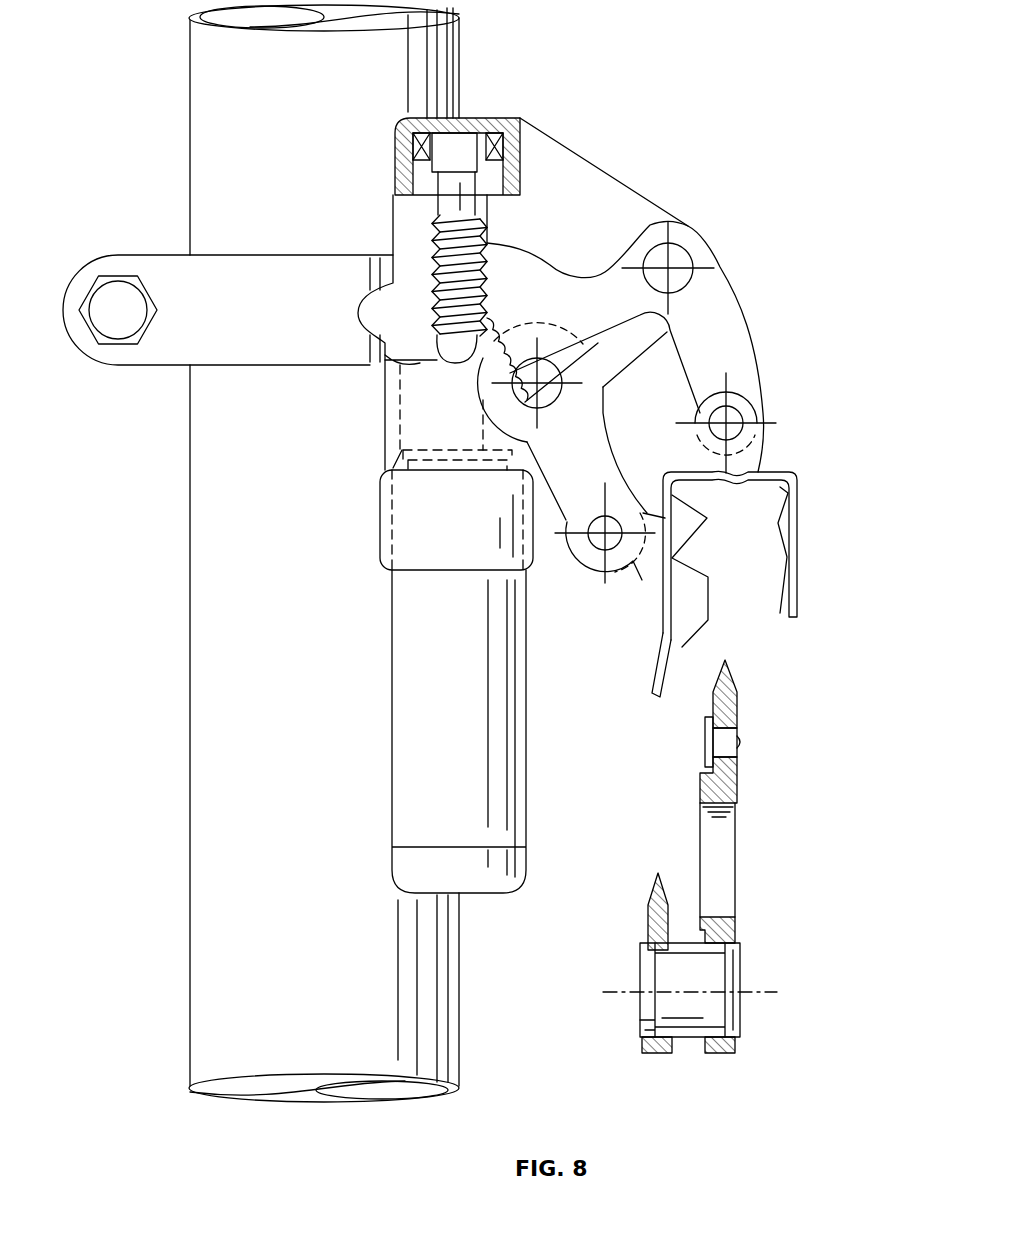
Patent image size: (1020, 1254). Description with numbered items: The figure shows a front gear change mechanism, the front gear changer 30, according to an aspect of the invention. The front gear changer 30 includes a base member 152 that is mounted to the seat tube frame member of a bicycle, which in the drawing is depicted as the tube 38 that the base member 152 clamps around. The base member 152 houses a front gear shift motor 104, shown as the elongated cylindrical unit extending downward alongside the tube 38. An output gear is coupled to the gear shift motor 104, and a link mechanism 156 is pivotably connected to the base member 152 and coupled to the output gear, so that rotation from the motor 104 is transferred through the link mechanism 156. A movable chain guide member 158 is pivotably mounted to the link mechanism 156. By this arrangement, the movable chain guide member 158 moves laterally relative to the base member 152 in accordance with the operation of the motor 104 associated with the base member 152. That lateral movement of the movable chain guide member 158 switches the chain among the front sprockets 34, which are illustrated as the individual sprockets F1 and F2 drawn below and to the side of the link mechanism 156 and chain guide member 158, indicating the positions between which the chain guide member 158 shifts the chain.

The front gear changer 30 is at (632, 155).
The front sprockets 34 is at (776, 895).
The pipe 38 is at (198, 430).
The front gear shift motor 104 is at (392, 785).
The base member 152 is at (240, 283).
The link mechanism 156 is at (732, 306).
The movable chain guide member 158 is at (797, 547).
The front sprocket F1 is at (658, 873).
The front sprocket F2 is at (732, 673).